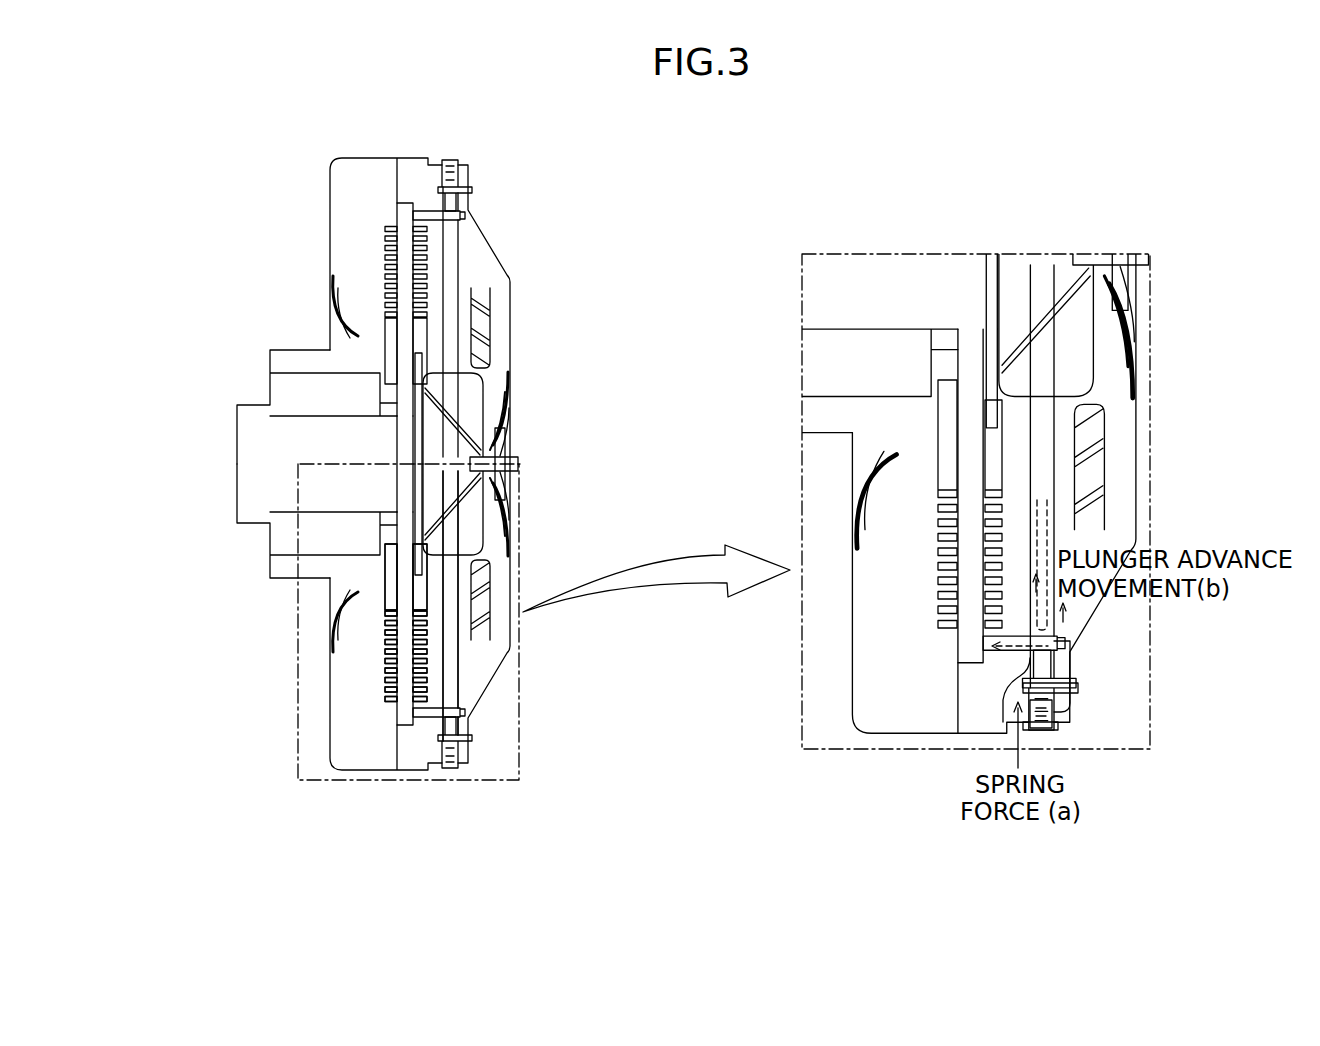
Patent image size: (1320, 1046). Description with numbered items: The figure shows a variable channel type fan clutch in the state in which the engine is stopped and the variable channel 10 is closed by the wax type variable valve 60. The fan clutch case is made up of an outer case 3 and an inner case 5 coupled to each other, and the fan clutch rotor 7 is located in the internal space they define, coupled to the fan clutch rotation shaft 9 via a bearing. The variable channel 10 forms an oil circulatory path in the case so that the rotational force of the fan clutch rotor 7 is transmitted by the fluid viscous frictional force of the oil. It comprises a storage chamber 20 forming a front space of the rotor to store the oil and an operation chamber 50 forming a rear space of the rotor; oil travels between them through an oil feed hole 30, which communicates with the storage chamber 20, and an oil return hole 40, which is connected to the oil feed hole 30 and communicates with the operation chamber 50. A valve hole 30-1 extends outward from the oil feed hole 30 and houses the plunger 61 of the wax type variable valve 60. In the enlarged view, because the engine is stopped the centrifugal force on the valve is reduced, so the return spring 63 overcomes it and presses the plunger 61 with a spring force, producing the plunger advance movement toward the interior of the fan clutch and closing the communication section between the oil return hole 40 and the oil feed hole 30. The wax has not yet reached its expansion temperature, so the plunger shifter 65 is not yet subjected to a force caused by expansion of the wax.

The outer case 3 is at (492, 307).
The inner case 5 is at (360, 240).
The fan clutch rotor 7 is at (408, 340).
The fan clutch rotation shaft 9 is at (282, 452).
The variable channel 10 is at (212, 600).
The storage chamber 20 is at (440, 480).
The oil feed hole 30 is at (452, 578).
The valve hole 30-1 is at (1028, 668).
The oil return hole 40 is at (437, 712).
The operation chamber 50 is at (388, 647).
The wax type variable valve 60 is at (465, 190).
The plunger 61 is at (1070, 653).
The return spring 63 is at (1050, 710).
The plunger shifter 65 is at (1078, 688).